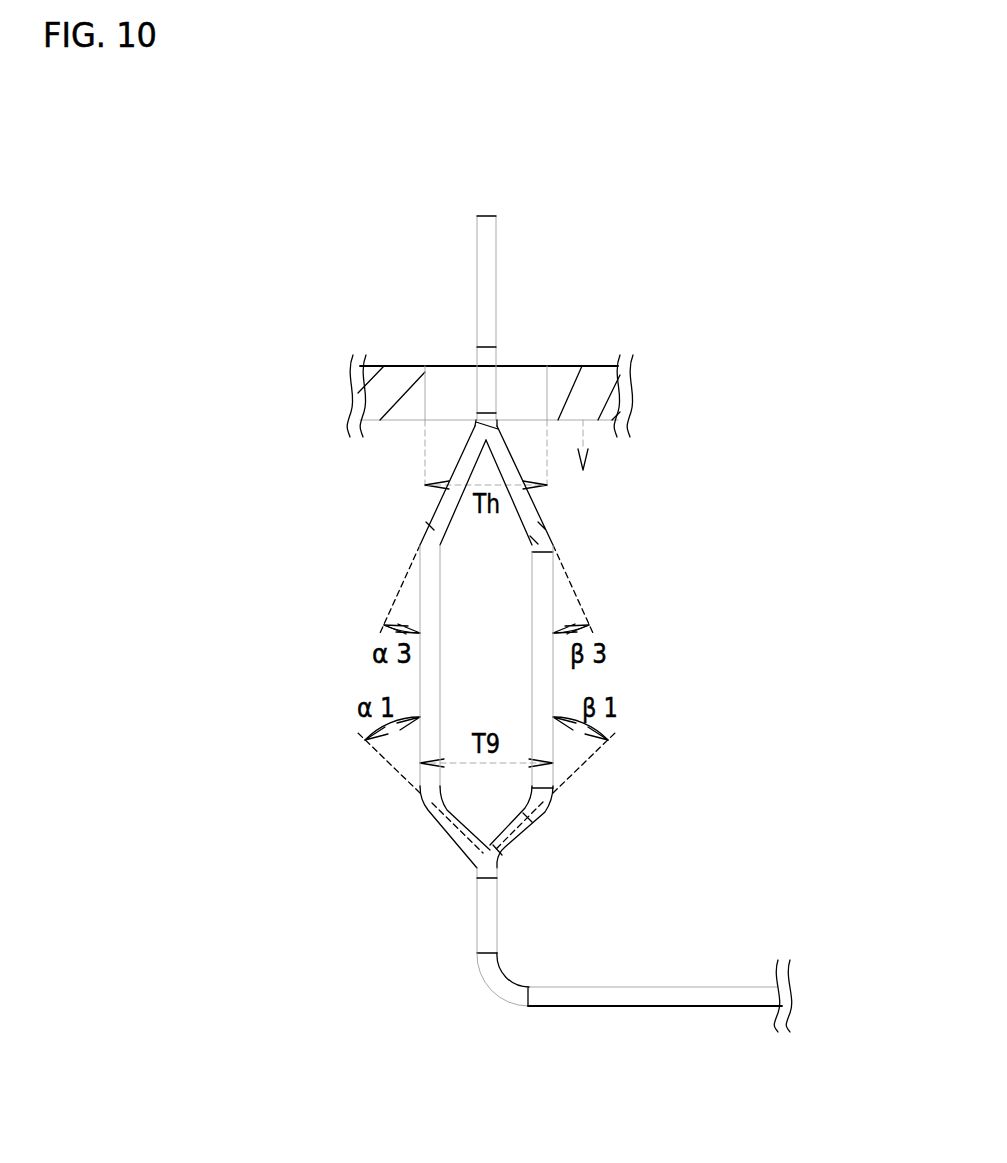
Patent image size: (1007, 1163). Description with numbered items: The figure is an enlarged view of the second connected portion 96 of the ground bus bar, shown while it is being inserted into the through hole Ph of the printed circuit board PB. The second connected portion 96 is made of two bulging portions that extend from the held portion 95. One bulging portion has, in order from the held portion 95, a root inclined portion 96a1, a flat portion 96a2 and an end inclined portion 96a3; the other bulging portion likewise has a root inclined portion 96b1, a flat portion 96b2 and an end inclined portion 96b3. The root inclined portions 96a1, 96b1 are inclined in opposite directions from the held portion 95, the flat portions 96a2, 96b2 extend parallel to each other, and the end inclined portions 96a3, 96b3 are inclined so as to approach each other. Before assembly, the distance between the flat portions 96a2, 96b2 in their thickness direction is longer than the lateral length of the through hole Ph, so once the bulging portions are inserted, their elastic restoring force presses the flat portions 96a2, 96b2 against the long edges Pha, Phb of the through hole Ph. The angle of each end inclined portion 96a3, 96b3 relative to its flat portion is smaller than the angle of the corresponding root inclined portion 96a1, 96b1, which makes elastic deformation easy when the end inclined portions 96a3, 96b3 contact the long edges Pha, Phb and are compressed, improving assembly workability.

The second connected portion 96 is at (507, 679).
The held portion 95 is at (720, 995).
The root inclined portion 96a1 is at (440, 827).
The flat portion 96a2 is at (420, 685).
The end inclined portion 96a3 is at (425, 527).
The root inclined portion 96b1 is at (530, 828).
The flat portion 96b2 is at (553, 685).
The end inclined portion 96b3 is at (545, 530).
The through hole Ph is at (507, 382).
The long edge Pha is at (427, 397).
The long edge Phb is at (533, 393).
The printed circuit board PB is at (593, 377).